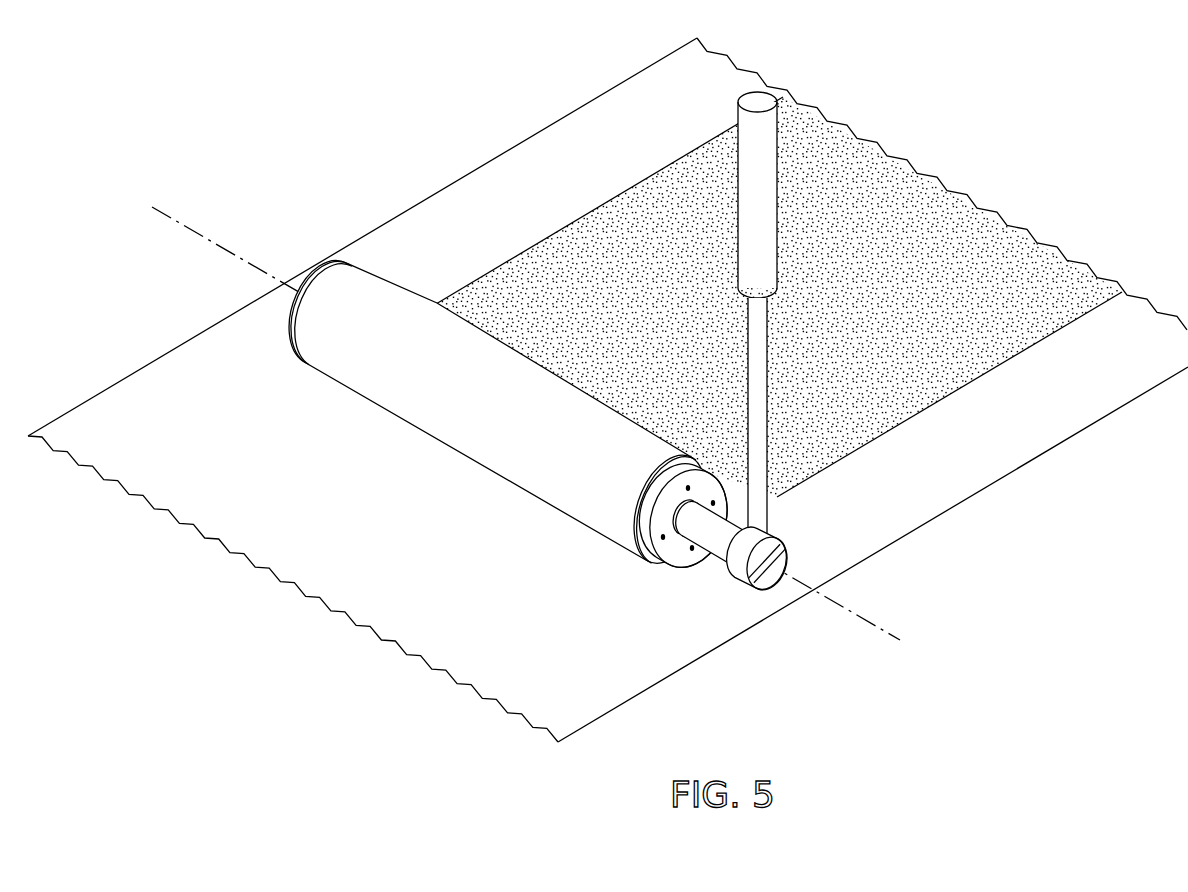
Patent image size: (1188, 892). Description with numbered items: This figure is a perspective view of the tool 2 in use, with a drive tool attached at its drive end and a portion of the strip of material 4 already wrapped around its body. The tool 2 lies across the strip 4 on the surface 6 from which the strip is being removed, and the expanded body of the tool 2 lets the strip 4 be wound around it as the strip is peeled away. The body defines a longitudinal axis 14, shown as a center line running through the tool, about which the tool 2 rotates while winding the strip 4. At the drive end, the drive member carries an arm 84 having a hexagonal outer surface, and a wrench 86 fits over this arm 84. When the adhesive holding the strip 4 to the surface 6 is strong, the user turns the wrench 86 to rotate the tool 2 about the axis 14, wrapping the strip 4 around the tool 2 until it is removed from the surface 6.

The tool 2 is at (308, 243).
The strip of material 4 is at (634, 206).
The surface 6 is at (191, 343).
The longitudinal axis 14 is at (171, 218).
The arm 84 is at (690, 530).
The wrench 86 is at (768, 511).